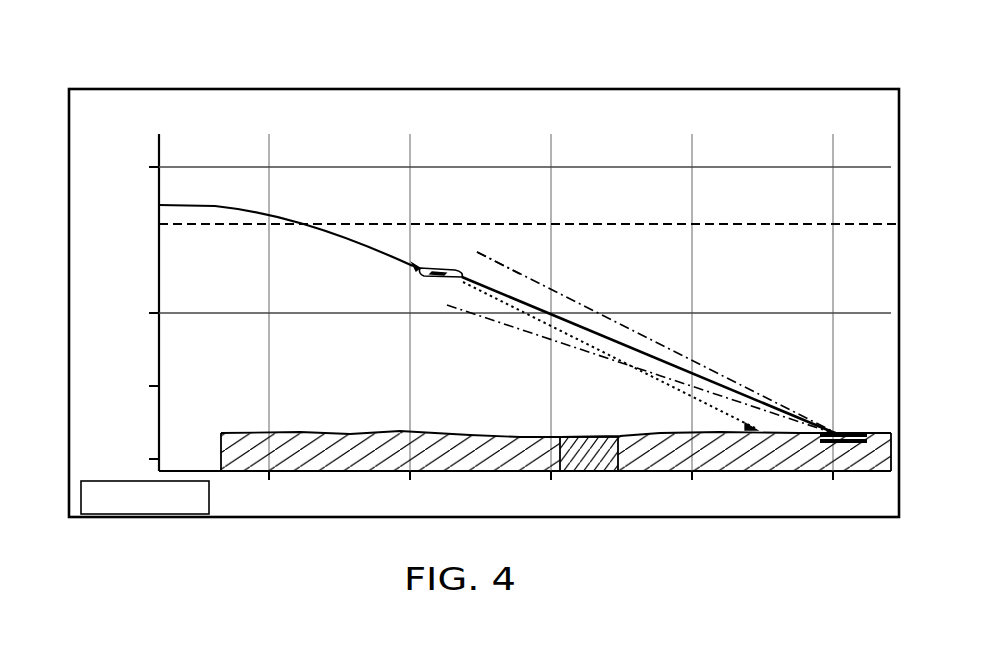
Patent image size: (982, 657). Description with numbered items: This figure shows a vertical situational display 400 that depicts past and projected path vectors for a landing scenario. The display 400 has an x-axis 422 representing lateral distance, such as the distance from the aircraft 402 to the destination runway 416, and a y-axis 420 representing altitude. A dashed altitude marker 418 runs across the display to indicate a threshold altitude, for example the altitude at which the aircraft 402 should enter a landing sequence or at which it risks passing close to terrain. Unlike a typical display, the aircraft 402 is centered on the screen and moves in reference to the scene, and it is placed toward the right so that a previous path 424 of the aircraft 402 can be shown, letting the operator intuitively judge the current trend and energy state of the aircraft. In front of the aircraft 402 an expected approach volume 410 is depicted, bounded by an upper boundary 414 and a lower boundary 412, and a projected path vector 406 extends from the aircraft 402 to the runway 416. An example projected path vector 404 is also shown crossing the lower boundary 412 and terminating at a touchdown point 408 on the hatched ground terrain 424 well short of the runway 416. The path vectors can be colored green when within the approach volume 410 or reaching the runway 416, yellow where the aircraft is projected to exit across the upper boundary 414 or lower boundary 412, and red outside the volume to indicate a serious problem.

The vertical situational display 400 is at (146, 66).
The aircraft 402 is at (441, 266).
The example projected path vector 404 is at (502, 304).
The projected path vector 406 is at (513, 297).
The touchdown point 408 is at (755, 432).
The expected approach volume 410 is at (469, 243).
The lower boundary 412 is at (582, 352).
The upper boundary 414 is at (582, 302).
The runway 416 is at (848, 445).
The altitude marker 418 is at (738, 226).
The y-axis 420 is at (62, 315).
The x-axis 422 is at (263, 521).
The previous path 424 is at (240, 205).